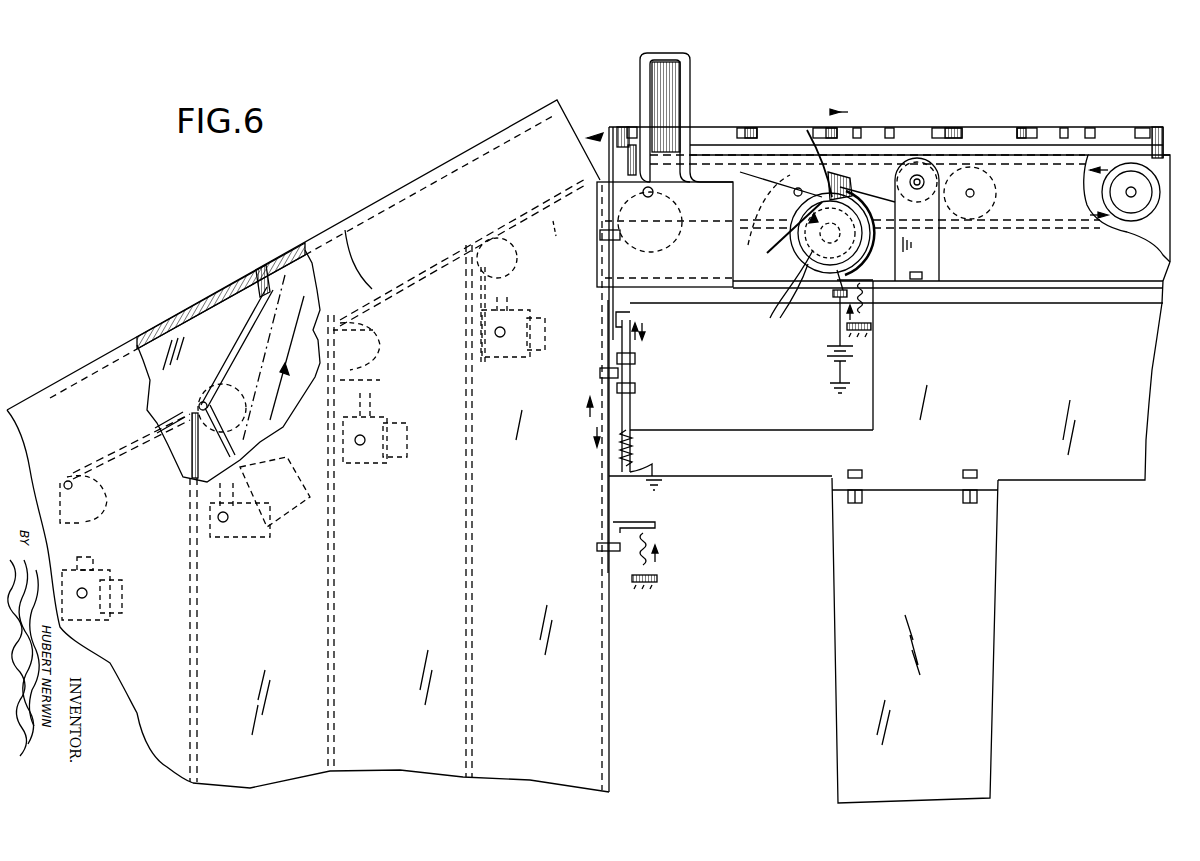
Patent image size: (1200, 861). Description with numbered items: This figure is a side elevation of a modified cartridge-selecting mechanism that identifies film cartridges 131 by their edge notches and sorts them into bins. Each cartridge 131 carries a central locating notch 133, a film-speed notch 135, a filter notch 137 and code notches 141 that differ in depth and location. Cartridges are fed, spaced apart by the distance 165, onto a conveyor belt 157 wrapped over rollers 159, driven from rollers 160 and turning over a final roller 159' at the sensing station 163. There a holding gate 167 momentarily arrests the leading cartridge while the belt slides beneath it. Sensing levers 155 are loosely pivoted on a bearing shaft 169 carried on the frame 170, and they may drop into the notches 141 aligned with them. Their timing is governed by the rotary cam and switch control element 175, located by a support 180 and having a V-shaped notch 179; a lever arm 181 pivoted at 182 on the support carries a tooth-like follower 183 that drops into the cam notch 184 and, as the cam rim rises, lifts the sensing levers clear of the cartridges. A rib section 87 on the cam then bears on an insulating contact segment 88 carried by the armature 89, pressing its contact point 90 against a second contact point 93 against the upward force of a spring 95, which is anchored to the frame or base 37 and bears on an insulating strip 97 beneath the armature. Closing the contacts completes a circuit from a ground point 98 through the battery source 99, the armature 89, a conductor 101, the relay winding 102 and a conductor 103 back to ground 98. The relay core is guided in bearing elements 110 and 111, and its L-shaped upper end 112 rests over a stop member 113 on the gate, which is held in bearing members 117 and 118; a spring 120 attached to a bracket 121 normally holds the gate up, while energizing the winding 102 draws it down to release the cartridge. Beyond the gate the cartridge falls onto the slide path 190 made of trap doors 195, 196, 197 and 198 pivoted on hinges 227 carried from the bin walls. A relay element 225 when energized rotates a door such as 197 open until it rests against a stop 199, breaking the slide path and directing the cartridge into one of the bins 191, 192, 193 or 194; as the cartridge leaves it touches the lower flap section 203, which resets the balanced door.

The stop 199 is at (487, 138).
The slide path 190 is at (348, 226).
The trap door element 195 is at (548, 214).
The hinge element 227 is at (515, 258).
The trap door element 196 is at (440, 276).
The film cartridge 131 is at (288, 300).
The trap door element 197 is at (245, 345).
The trap door element 198 is at (120, 462).
The lower flap section 203 is at (262, 478).
The relay element 225 is at (508, 358).
The article receiving bin 194 is at (159, 541).
The article receiving bin 193 is at (277, 647).
The article receiving bin 192 is at (414, 566).
The article receiving bin 191 is at (554, 522).
The final roller 159' is at (665, 234).
The frame 170 is at (646, 70).
The sensing levers 155 is at (690, 58).
The bearing shaft 169 is at (632, 112).
The holding gate 167 is at (609, 155).
The sensing station 163 is at (750, 81).
The spacing 165 is at (1002, 142).
The filter notch 137 is at (628, 125).
The film-speed notch 135 is at (768, 127).
The code notches 141 is at (858, 127).
The locating notch 133 is at (890, 127).
The rollers 159 is at (888, 212).
The conveyor belt 157 is at (1010, 170).
The pivot 182 is at (925, 180).
The support 180 is at (932, 254).
The rib section 87 is at (917, 244).
The cam notch 184 is at (852, 194).
The driving rollers 160 is at (782, 228).
The cam follower section 183 is at (807, 138).
The lever arm 181 is at (781, 208).
The insulating contact segment 88 is at (830, 233).
The V-shaped notch 179 is at (808, 262).
The armature 89 is at (880, 283).
The conductor 101 is at (680, 430).
The stop member 113 is at (615, 323).
The L-formation 112 is at (630, 314).
The guide element 111 is at (637, 356).
The guide element 110 is at (637, 388).
The bearing member 117 is at (600, 373).
The relay winding 102 is at (634, 444).
The conductor 103 is at (652, 466).
The ground point 98 is at (660, 487).
The bracket 121 is at (645, 522).
The spring member 120 is at (652, 540).
The frame 37 is at (655, 585).
The bearing member 118 is at (597, 547).
The insulating strip 97 is at (862, 280).
The spring 95 is at (870, 322).
The second contact point 93 is at (836, 300).
The contact point 90 is at (835, 296).
The source 99 is at (853, 356).
The cam and switch control element 175 is at (789, 292).